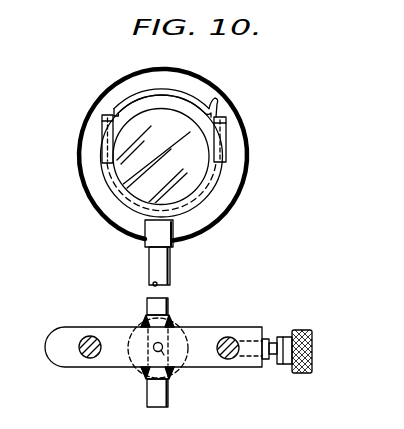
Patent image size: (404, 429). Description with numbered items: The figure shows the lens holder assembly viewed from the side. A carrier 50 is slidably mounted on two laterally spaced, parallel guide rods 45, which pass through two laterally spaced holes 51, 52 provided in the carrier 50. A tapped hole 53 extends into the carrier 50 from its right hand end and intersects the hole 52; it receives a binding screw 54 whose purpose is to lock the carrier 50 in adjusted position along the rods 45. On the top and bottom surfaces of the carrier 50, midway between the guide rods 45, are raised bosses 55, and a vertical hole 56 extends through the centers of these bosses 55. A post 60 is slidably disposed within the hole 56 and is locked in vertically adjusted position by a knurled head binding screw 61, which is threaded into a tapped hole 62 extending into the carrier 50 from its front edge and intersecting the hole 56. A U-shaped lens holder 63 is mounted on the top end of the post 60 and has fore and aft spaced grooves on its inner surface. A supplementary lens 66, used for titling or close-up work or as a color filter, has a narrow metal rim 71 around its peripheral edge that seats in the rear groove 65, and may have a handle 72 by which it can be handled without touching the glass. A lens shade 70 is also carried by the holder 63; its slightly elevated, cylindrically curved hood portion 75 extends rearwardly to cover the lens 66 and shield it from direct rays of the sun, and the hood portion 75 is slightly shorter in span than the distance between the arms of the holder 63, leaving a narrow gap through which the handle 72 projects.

The guide rods 45 is at (92, 337).
The carrier 50 is at (203, 335).
The hole 51 is at (93, 353).
The hole 52 is at (229, 360).
The tapped hole 53 is at (248, 353).
The binding screw 54 is at (288, 340).
The raised bosses 55 is at (146, 316).
The vertical hole 56 is at (148, 370).
The post 60 is at (172, 262).
The knurled head binding screw 61 is at (130, 352).
The tapped hole 62 is at (170, 361).
The U-shaped lens holder 63 is at (110, 187).
The rear groove 65 is at (114, 153).
The supplementary lens 66 is at (196, 163).
The lens shade 70 is at (243, 66).
The metal rim 71 is at (118, 127).
The handle 72 is at (223, 114).
The hood portion 75 is at (142, 93).